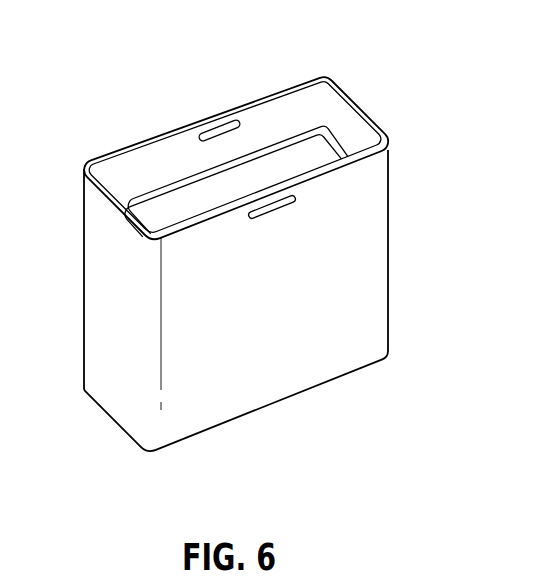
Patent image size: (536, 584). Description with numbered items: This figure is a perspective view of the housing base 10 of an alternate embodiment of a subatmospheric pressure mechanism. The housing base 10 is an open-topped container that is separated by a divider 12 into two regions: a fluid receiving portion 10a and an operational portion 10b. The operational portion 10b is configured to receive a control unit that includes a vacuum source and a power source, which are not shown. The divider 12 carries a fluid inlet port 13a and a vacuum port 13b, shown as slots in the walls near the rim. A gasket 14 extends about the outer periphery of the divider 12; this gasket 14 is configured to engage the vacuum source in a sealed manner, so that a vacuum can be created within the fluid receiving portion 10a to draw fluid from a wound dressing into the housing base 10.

The housing base 10 is at (417, 59).
The fluid receiving portion 10a is at (288, 312).
The operational portion 10b is at (153, 162).
The divider 12 is at (125, 200).
The fluid inlet port 13a is at (230, 183).
The vacuum port 13b is at (245, 197).
The gasket 14 is at (348, 150).